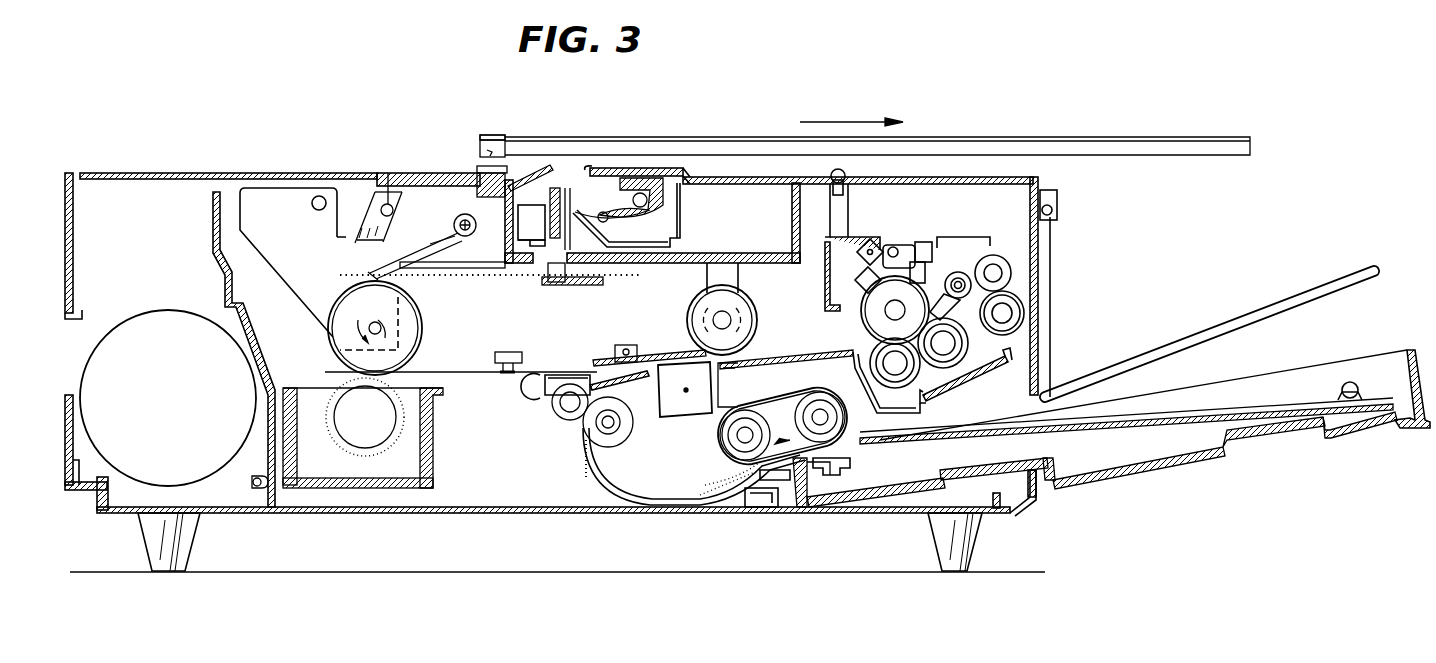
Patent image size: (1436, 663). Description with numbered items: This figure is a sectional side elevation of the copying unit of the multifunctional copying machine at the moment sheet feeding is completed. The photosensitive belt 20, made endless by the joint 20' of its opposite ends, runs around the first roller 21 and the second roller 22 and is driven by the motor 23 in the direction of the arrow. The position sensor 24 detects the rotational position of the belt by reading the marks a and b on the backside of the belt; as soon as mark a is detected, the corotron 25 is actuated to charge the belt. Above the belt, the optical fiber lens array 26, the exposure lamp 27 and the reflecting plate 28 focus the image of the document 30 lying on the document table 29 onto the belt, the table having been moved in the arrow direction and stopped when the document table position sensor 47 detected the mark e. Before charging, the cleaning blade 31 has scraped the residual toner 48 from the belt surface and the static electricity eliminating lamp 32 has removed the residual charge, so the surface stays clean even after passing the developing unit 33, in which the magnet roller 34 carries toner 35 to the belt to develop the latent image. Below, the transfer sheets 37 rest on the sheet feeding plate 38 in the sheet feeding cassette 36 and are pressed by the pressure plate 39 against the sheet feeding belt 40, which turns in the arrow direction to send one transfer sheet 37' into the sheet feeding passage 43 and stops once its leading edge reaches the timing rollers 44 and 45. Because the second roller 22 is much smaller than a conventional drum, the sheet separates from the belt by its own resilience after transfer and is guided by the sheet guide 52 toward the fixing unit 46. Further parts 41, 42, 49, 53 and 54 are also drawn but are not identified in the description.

The photosensitive belt 20 is at (554, 287).
The joint 20' is at (640, 339).
The first roller 21 is at (410, 330).
The second roller 22 is at (695, 310).
The motor 23 is at (108, 368).
The position sensor 24 is at (508, 366).
The corotron 25 is at (683, 405).
The optical fiber lens array 26 is at (556, 200).
The exposure lamp 27 is at (633, 200).
The reflecting plate 28 is at (663, 200).
The document table 29 is at (1120, 150).
The document 30 is at (1018, 138).
The cleaning blade 31 is at (380, 262).
The static electricity eliminating lamp 32 is at (388, 173).
The developing unit 33 is at (283, 495).
The magnet roller 34 is at (360, 442).
The toner 35 is at (350, 380).
The sheet feeding cassette 36 is at (1183, 460).
The transfer sheets 37 is at (1209, 337).
The transfer sheet 37' is at (592, 466).
The sheet feeding plate 38 is at (1102, 445).
The pressure plate 39 is at (840, 470).
The sheet feeding belt 40 is at (790, 405).
The belt guide 41 is at (730, 448).
The fixing roller 42 is at (810, 422).
The sheet feeding passage 43 is at (672, 503).
The timing roller 44 is at (565, 415).
The timing roller 45 is at (606, 448).
The fixing unit 46 is at (897, 292).
The document table position sensor 47 is at (478, 170).
The residual toner 48 is at (475, 270).
The pivot screw 49 is at (455, 222).
The sheet guide 52 is at (525, 136).
The drum shaft 53 is at (381, 327).
The roller shaft 54 is at (716, 320).
The mark a is at (505, 374).
The mark b is at (452, 276).
The mark e is at (490, 150).